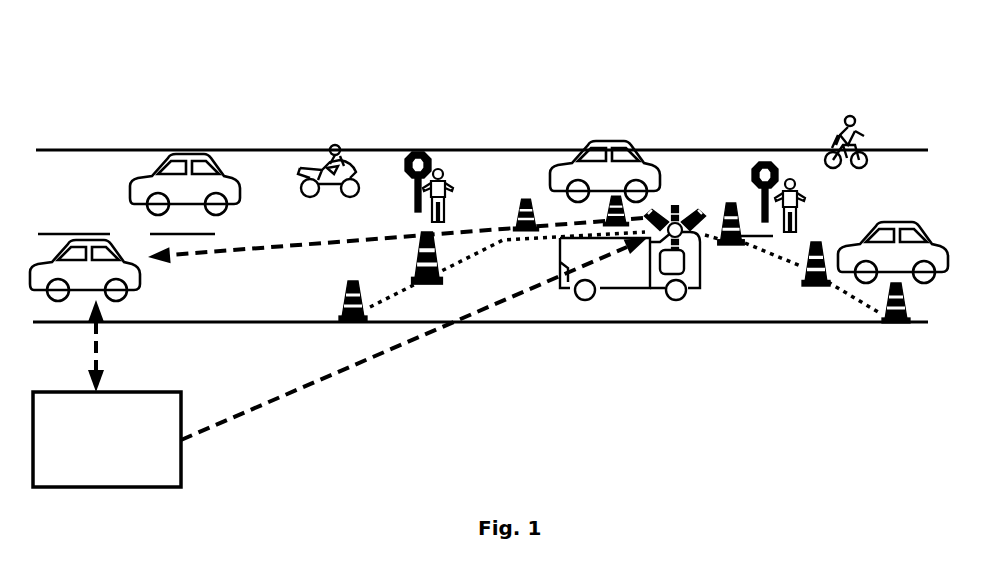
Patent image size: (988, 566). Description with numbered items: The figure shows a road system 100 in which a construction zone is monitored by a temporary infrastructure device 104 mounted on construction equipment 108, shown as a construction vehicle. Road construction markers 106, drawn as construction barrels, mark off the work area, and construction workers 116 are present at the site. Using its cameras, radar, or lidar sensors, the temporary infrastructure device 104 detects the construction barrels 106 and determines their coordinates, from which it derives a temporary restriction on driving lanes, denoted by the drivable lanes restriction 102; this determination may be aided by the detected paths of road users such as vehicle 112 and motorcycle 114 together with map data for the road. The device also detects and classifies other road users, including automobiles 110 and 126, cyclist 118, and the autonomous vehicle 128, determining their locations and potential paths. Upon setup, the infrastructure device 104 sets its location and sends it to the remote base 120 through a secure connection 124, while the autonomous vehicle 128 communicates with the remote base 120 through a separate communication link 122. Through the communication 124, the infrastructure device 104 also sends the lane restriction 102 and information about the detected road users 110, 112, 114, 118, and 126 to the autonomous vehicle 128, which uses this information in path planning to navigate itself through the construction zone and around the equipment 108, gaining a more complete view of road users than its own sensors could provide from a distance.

The road system 100 is at (503, 388).
The drivable lanes restriction 102 is at (498, 245).
The temporary infrastructure device 104 is at (682, 203).
The road construction markers 106 is at (430, 282).
The construction equipment 108 is at (610, 287).
The automobile 110 is at (208, 160).
The vehicle 112 is at (593, 137).
The motorcycle 114 is at (328, 147).
The construction workers 116 is at (437, 170).
The cyclist 118 is at (850, 120).
The remote base 120 is at (77, 486).
The communication link 122 is at (83, 346).
The secure connection 124 is at (414, 339).
The automobile 126 is at (912, 218).
The autonomous vehicle 128 is at (100, 237).